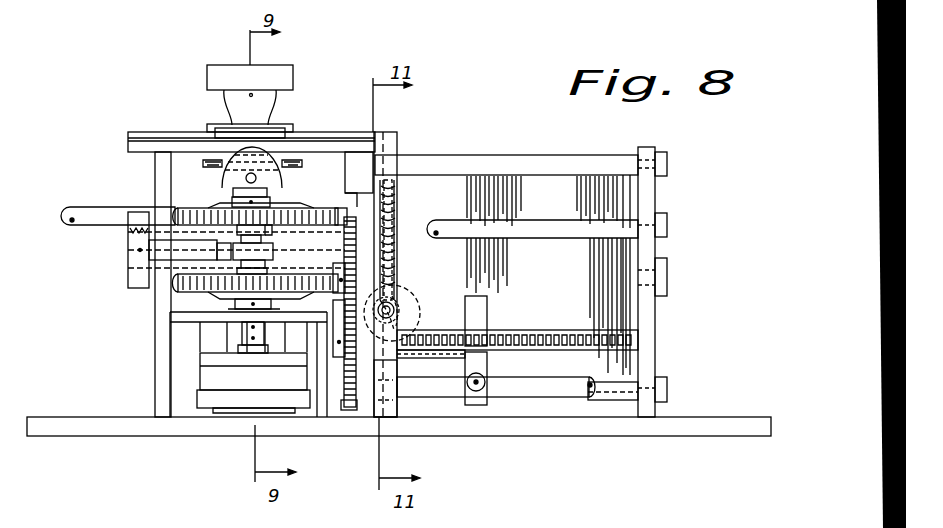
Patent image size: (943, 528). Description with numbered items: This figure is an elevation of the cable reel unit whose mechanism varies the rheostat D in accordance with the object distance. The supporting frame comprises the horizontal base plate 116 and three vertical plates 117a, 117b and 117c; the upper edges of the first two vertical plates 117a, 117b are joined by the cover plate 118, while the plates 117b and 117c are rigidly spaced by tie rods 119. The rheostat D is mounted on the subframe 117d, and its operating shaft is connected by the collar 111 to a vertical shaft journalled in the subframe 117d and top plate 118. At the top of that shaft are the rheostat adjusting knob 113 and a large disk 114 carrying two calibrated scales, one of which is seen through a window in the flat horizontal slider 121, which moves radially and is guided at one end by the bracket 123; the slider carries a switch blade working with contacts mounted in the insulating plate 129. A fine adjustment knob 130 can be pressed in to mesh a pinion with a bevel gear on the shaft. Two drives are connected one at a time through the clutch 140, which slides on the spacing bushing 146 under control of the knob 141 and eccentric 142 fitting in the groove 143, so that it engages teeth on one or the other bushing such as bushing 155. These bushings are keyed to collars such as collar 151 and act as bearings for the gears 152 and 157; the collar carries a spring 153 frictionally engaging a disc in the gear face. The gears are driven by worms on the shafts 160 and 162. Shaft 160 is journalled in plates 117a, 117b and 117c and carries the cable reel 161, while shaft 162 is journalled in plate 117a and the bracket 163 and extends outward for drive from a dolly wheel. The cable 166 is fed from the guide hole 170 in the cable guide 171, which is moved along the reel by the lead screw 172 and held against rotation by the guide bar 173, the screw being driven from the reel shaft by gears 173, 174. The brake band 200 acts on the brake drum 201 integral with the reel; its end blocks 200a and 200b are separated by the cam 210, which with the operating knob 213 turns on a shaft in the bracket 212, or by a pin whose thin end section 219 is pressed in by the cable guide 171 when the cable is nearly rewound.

The collar 111 is at (265, 332).
The rheostat adjusting knob 113 is at (293, 72).
The disk 114 is at (150, 132).
The base plate 116 is at (91, 428).
The vertical plate 117a is at (163, 359).
The vertical plate 117b is at (367, 167).
The vertical plate 117c is at (645, 145).
The subframe 117d is at (191, 343).
The cover plate 118 is at (128, 147).
The tie rods 119 is at (527, 157).
The slider 121 is at (280, 127).
The bracket 123 is at (212, 130).
The insulating plate 129 is at (283, 152).
The knob 130 is at (297, 172).
The clutch 140 is at (272, 244).
The knob 141 is at (138, 262).
The eccentric 142 is at (227, 259).
The groove 143 is at (272, 262).
The spacing bushing 146 is at (238, 228).
The collar 151 is at (279, 304).
The gear 152 is at (185, 291).
The spring 153 is at (205, 292).
The bushing 155 is at (269, 224).
The gear 157 is at (182, 207).
The shaft 160 is at (179, 292).
The cable reel 161 is at (627, 207).
The shaft 162 is at (87, 210).
The bracket 163 is at (343, 172).
The cable 166 is at (620, 250).
The guide hole 170 is at (487, 371).
The cable guide 171 is at (477, 313).
The lead screw 172 is at (527, 330).
The guide bar 173 is at (345, 243).
The gear 174 is at (349, 398).
The brake band 200 is at (400, 202).
The block 200a is at (397, 292).
The block 200b is at (411, 314).
The brake drum 201 is at (398, 188).
The cam 210 is at (411, 300).
The bracket 212 is at (390, 387).
The operating knob 213 is at (402, 354).
The end section 219 is at (411, 288).
The rheostat D is at (227, 400).